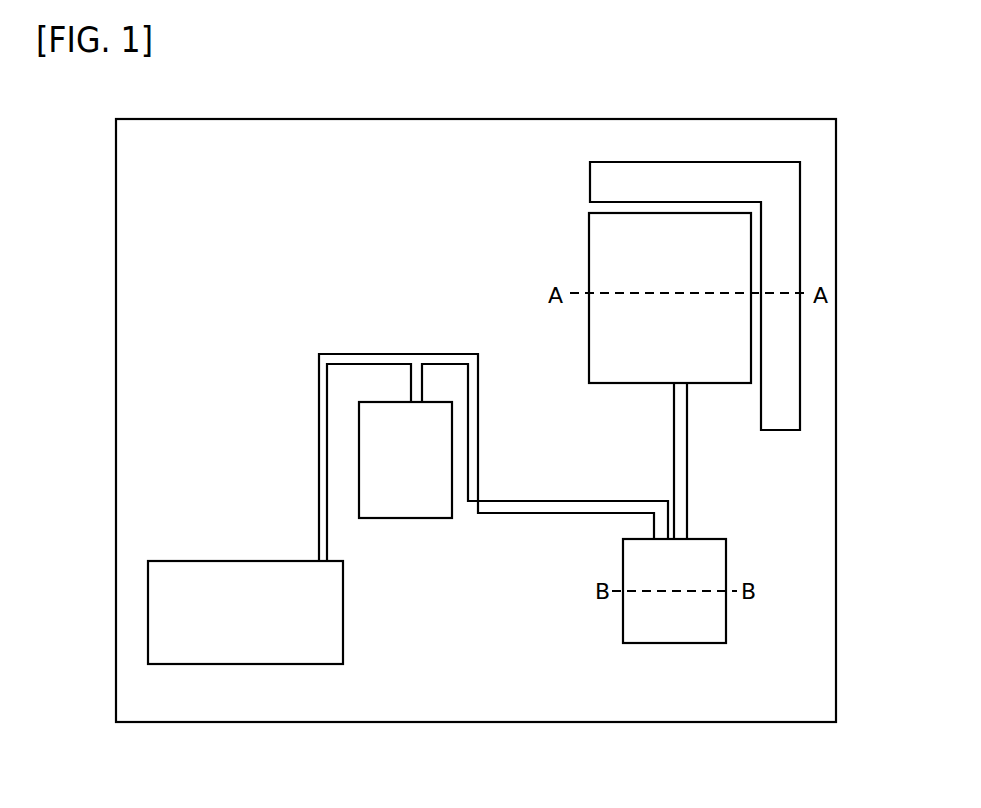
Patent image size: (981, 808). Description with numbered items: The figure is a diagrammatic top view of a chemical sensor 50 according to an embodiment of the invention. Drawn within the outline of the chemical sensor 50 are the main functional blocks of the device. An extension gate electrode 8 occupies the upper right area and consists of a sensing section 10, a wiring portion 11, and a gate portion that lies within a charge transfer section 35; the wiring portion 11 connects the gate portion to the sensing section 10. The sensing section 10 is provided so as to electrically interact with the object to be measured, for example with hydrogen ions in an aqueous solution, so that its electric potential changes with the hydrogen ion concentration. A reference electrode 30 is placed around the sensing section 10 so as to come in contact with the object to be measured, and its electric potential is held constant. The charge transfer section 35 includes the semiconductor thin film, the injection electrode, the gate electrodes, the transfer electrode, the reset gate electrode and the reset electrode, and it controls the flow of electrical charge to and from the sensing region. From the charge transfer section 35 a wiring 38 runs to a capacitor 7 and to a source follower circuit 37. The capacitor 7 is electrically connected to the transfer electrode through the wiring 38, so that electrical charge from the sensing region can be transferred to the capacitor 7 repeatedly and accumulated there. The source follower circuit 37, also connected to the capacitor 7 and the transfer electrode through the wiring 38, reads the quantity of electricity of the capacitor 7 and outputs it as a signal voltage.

The chemical sensor 50 is at (803, 111).
The reference electrode 30 is at (779, 238).
The extension gate electrode 8 is at (751, 376).
The sensing section 10 is at (717, 330).
The wiring portion 11 is at (681, 449).
The charge transfer section 35 is at (702, 617).
The source follower circuit 37 is at (412, 488).
The capacitor 7 is at (193, 625).
The wiring 38 is at (325, 442).